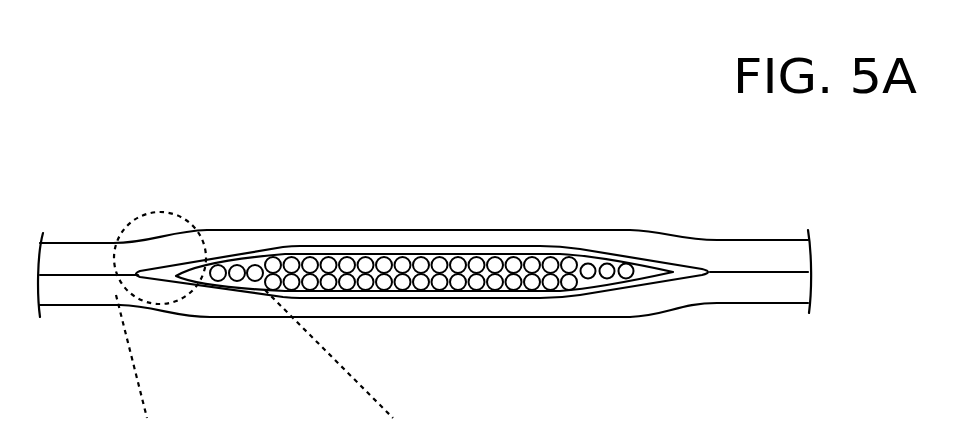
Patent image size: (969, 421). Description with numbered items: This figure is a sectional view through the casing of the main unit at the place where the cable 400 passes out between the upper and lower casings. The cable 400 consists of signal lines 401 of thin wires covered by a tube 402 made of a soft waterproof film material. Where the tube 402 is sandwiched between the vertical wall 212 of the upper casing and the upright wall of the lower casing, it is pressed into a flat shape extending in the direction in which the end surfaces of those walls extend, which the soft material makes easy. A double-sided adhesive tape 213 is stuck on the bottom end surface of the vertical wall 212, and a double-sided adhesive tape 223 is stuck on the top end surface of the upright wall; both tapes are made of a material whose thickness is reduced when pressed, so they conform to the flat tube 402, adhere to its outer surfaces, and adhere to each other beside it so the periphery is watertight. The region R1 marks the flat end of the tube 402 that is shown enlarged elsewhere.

The vertical wall 212 is at (367, 60).
The double-sided adhesive tape 213 is at (690, 253).
The double-sided adhesive tape 223 is at (678, 295).
The cable 400 is at (637, 248).
The signal lines 401 is at (422, 257).
The tube 402 is at (488, 233).
The region R1 is at (136, 214).